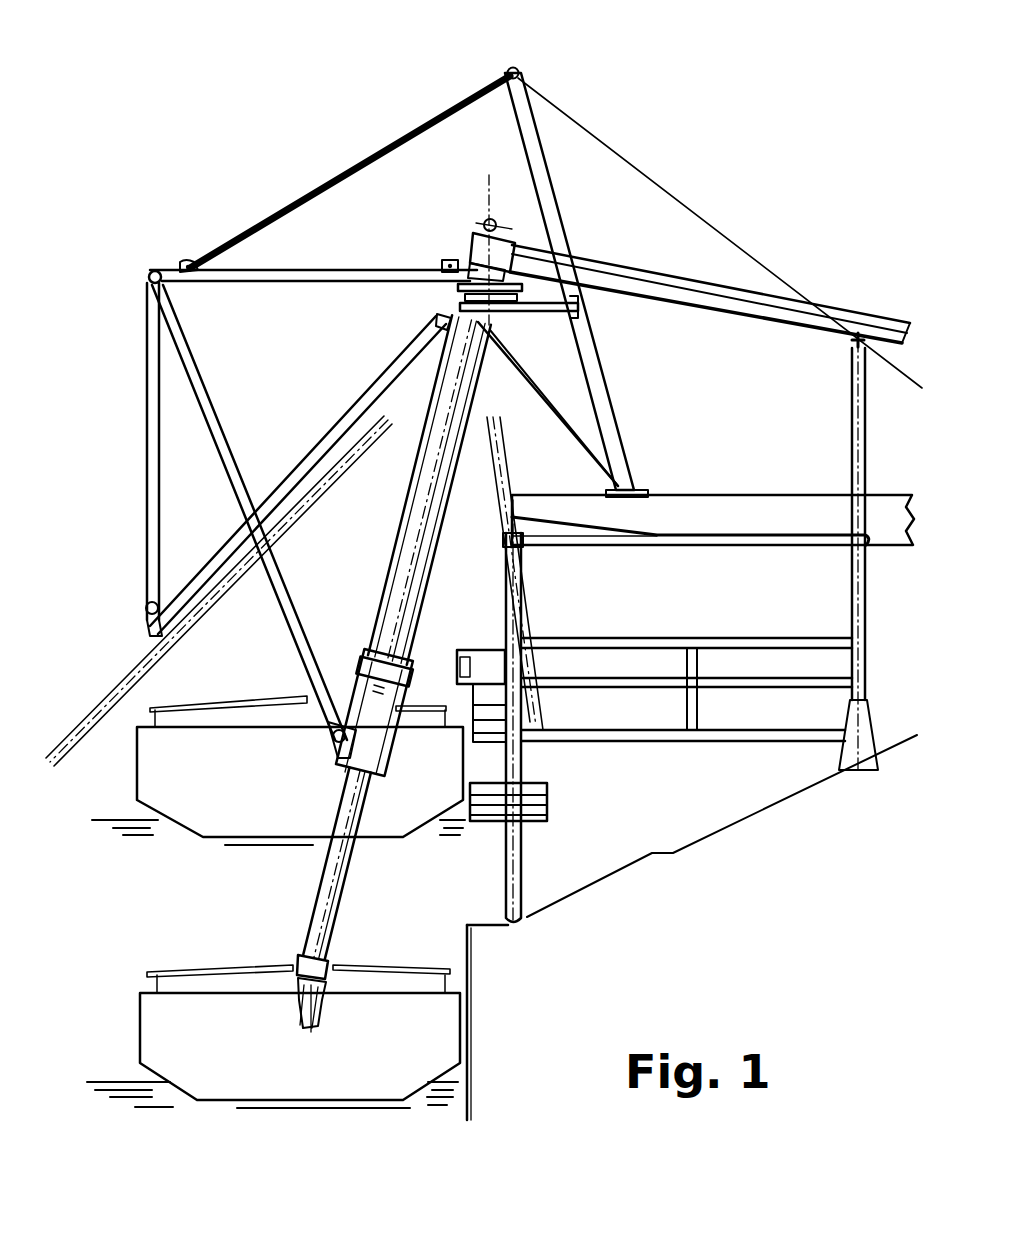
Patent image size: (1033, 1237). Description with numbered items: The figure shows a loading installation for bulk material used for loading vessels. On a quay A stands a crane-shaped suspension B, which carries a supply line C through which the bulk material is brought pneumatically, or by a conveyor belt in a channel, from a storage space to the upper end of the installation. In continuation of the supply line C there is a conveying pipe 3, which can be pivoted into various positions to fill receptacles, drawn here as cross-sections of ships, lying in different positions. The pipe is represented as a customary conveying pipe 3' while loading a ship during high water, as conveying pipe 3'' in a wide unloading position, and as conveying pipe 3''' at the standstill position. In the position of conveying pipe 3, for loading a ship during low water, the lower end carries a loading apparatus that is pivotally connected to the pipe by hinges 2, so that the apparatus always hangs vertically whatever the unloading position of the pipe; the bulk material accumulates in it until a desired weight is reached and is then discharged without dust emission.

The crane-shaped suspension B is at (588, 76).
The supply line C is at (836, 311).
The quay A is at (717, 765).
The conveying pipe 3 is at (304, 863).
The customary conveying pipe 3' is at (413, 545).
The conveying pipe in wide unloading position 3'' is at (219, 591).
The conveying pipe at standstill position 3''' is at (546, 573).
The hinges 2 is at (342, 950).